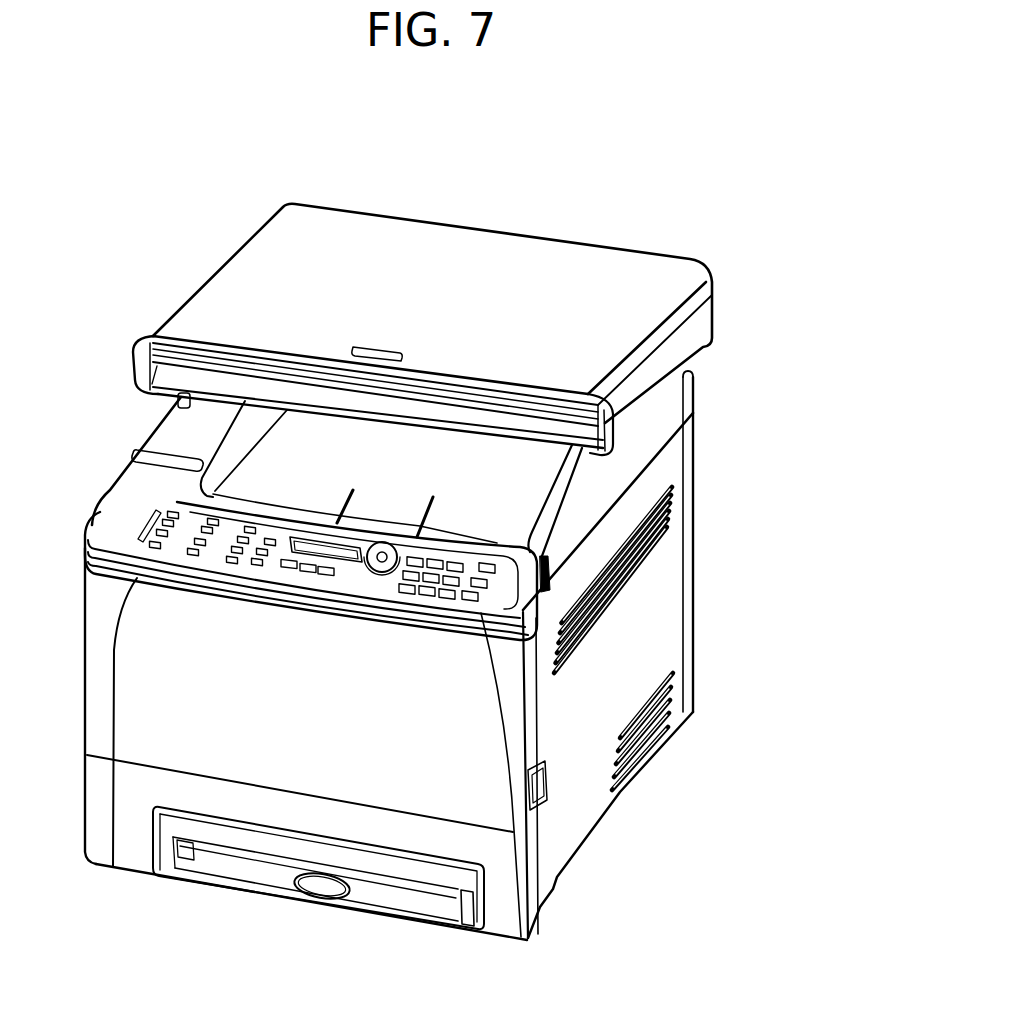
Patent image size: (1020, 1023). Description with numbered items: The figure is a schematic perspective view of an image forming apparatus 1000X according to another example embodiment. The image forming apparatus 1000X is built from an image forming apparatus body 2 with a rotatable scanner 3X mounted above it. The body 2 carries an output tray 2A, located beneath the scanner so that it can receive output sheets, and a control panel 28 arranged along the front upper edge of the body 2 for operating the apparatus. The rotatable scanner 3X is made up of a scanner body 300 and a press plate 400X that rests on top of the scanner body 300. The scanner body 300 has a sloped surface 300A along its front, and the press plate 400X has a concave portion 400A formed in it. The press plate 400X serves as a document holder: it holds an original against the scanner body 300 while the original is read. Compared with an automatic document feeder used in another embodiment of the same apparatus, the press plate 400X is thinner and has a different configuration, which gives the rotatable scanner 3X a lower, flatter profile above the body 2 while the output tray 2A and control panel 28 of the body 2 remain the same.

The image forming apparatus 1000X is at (664, 158).
The rotatable scanner 3X is at (172, 210).
The press plate 400X is at (580, 256).
The concave portion 400A is at (323, 370).
The scanner body 300 is at (693, 347).
The sloped surface 300A is at (240, 365).
The image forming apparatus body 2 is at (625, 650).
The output tray 2A is at (292, 465).
The control panel 28 is at (373, 578).